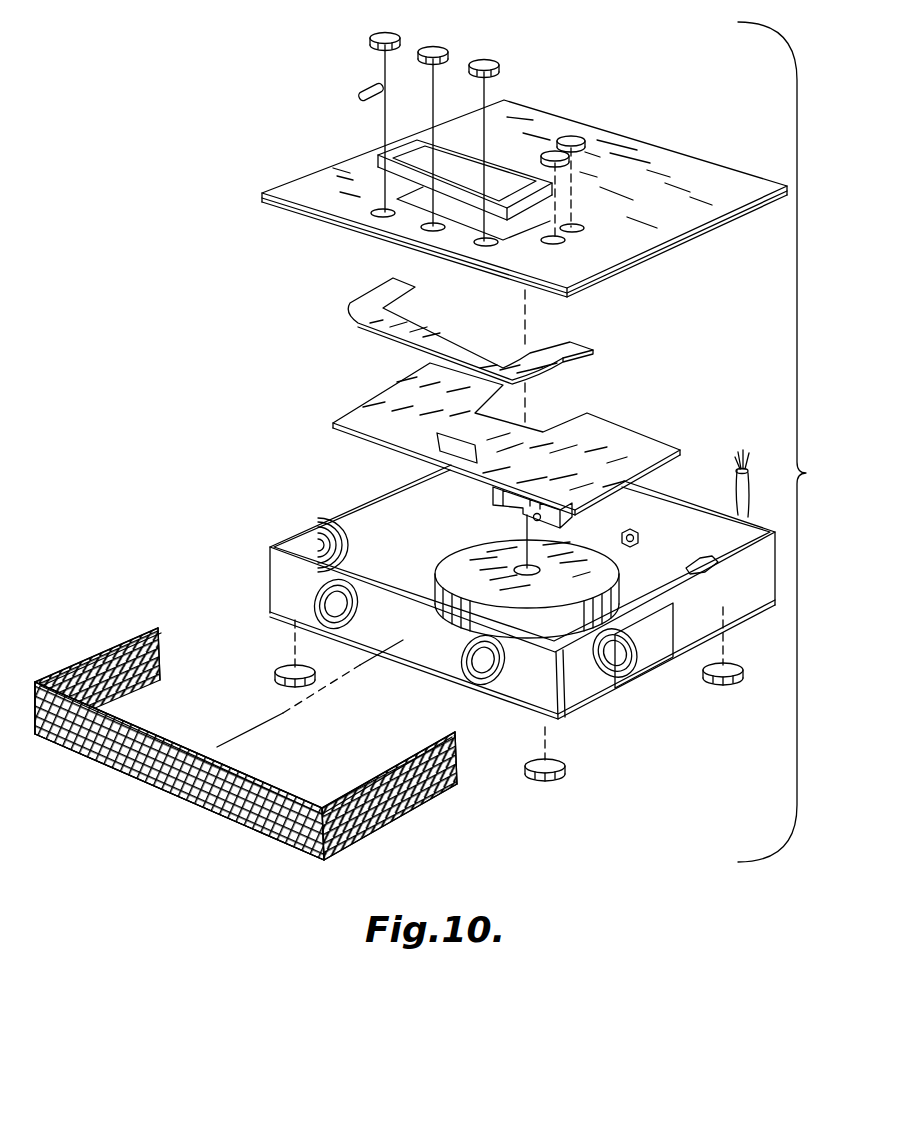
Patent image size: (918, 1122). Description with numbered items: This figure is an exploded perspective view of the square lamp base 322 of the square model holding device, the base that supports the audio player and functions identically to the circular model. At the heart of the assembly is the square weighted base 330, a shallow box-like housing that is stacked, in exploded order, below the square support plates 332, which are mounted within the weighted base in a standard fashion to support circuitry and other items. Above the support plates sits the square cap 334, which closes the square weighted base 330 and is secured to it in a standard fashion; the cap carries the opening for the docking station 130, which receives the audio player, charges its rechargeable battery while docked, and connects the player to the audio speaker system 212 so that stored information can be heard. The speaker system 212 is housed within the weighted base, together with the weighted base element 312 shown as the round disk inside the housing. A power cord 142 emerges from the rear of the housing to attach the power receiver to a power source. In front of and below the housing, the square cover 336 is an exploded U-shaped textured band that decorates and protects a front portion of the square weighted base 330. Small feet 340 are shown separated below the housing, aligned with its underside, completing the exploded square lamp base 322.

The docking station 130 is at (533, 167).
The power cord 142 is at (737, 492).
The audio speaker system 212 is at (313, 577).
The circular weighted base 312 is at (457, 550).
The square lamp base 322 is at (801, 442).
The square weighted base 330 is at (273, 590).
The square support plates 332 is at (382, 390).
The square cap 334 is at (693, 172).
The square cover 336 is at (410, 817).
The feet 340 is at (568, 772).